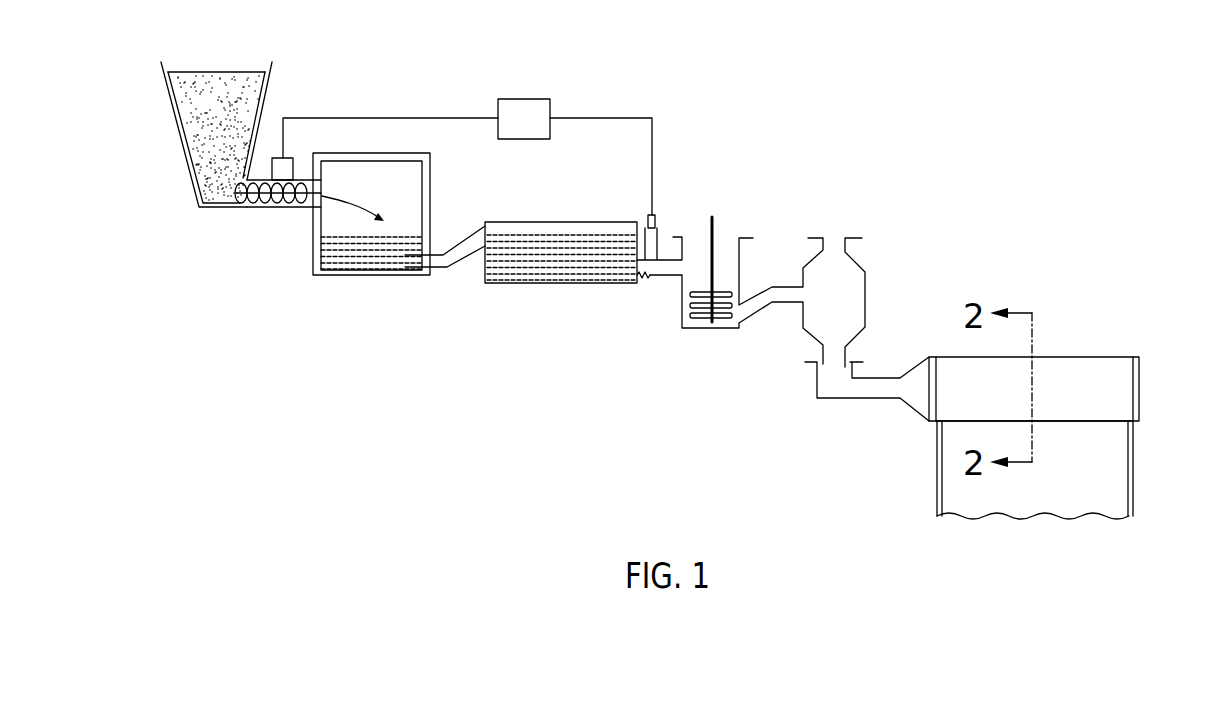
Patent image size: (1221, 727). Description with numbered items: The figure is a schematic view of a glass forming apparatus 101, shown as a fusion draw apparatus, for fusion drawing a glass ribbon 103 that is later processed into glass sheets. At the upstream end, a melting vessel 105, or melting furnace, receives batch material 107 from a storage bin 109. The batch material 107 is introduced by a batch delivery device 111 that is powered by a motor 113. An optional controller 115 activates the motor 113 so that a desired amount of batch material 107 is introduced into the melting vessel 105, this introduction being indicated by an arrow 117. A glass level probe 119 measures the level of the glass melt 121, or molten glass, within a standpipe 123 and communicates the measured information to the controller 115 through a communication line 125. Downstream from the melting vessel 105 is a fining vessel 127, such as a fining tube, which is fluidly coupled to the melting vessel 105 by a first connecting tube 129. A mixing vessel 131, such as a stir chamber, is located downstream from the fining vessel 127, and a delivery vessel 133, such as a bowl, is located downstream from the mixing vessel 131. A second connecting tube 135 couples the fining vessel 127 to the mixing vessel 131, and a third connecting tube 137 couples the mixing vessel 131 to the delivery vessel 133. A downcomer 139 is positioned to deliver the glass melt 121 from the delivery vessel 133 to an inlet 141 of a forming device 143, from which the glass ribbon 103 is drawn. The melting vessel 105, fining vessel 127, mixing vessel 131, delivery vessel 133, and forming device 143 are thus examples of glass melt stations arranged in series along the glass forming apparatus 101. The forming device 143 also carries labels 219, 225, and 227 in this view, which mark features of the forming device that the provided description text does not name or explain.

The glass forming apparatus 101 is at (863, 146).
The glass ribbon 103 is at (950, 497).
The melting vessel 105 is at (350, 301).
The batch material 107 is at (210, 70).
The storage bin 109 is at (180, 133).
The batch delivery device 111 is at (263, 206).
The motor 113 is at (290, 157).
The controller 115 is at (522, 98).
The arrow 117 is at (342, 192).
The glass level probe 119 is at (647, 215).
The glass melt 121 is at (400, 235).
The standpipe 123 is at (665, 232).
The communication line 125 is at (598, 118).
The fining vessel 127 is at (556, 222).
The first connecting tube 129 is at (468, 236).
The mixing vessel 131 is at (746, 260).
The delivery vessel 133 is at (868, 274).
The second connecting tube 135 is at (660, 278).
The third connecting tube 137 is at (762, 306).
The downcomer 139 is at (855, 353).
The inlet 141 is at (814, 383).
The forming device 143 is at (1070, 356).
The bottom wall 219 is at (1071, 427).
The side wall 225 is at (935, 393).
The end wall 227 is at (1142, 378).